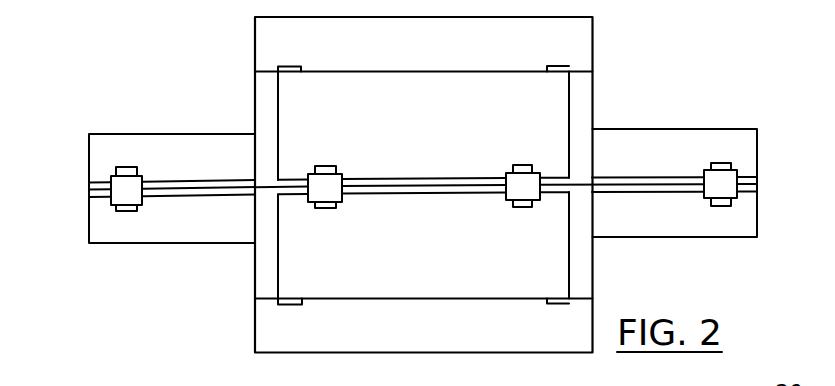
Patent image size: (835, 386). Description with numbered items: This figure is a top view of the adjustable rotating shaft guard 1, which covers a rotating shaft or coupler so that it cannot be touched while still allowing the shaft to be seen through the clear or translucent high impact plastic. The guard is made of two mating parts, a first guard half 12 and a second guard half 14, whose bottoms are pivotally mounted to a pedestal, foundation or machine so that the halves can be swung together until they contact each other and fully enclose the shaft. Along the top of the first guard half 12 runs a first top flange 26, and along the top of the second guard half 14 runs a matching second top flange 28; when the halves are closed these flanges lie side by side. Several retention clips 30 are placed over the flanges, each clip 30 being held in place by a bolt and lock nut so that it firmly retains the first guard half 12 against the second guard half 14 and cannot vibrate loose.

The adjustable rotating shaft guard 1 is at (138, 98).
The first guard half 12 is at (337, 282).
The second guard half 14 is at (503, 82).
The first top flange 26 is at (445, 190).
The second top flange 28 is at (375, 176).
The retention clip 30 is at (113, 201).